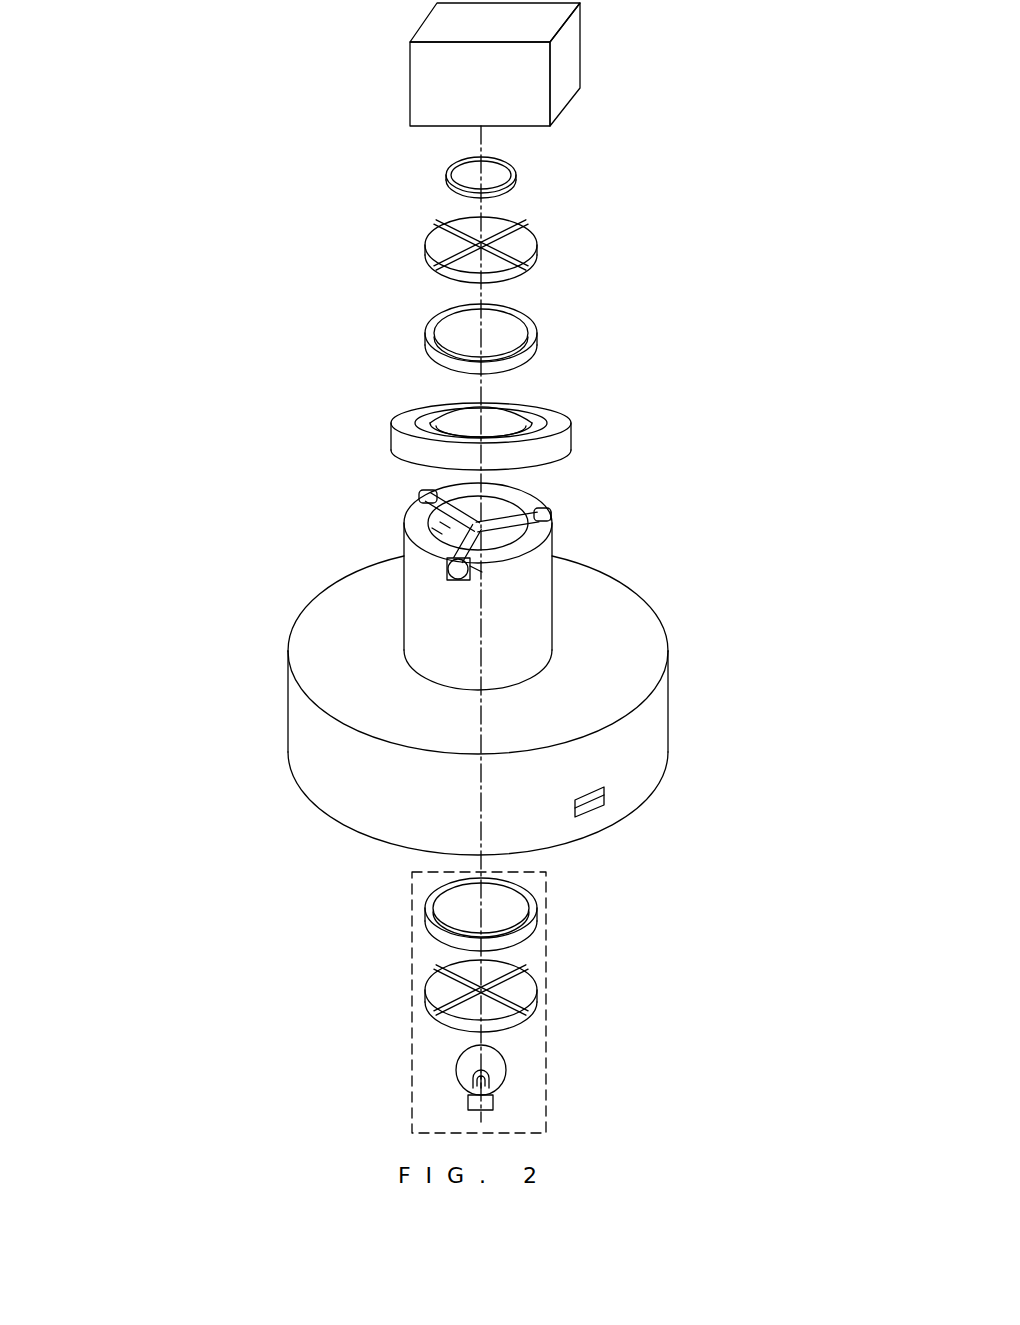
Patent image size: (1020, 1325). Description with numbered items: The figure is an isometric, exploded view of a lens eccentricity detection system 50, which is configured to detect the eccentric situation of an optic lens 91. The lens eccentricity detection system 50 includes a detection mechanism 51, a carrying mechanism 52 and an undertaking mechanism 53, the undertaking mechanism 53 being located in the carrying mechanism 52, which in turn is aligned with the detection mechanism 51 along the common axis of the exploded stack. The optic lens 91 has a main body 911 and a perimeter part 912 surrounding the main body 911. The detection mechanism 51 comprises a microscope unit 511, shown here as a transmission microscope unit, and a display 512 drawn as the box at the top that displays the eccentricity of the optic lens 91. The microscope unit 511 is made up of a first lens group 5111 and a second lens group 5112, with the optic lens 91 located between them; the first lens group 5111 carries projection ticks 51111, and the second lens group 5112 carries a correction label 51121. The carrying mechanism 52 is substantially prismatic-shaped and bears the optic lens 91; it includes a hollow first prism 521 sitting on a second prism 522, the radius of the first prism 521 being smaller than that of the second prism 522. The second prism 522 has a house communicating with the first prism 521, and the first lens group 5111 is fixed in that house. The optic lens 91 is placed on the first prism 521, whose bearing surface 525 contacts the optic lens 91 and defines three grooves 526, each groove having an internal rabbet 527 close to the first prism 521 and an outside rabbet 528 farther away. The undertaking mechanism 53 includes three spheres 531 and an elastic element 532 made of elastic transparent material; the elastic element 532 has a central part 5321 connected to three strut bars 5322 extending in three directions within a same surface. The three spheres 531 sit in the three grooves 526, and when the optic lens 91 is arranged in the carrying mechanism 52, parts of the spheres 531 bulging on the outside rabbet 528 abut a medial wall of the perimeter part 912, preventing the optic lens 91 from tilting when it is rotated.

The lens eccentricity detection system 50 is at (585, 35).
The detection mechanism 51 is at (98, 70).
The display 512 is at (410, 82).
The microscope unit 511 is at (195, 195).
The second lens group 5112 is at (413, 246).
The correction label 51121 is at (517, 224).
The optic lens 91 is at (668, 360).
The main body 911 is at (500, 420).
The perimeter part 912 is at (563, 445).
The undertaking mechanism 53 is at (721, 473).
The spheres 531 is at (540, 514).
The elastic element 532 is at (658, 458).
The central part 5321 is at (485, 523).
The strut bars 5322 is at (462, 514).
The carrying mechanism 52 is at (748, 527).
The first prism 521 is at (512, 628).
The second prism 522 is at (650, 710).
The bearing surface 525 is at (555, 515).
The grooves 526 is at (437, 531).
The internal rabbet 527 is at (447, 525).
The outside rabbet 528 is at (482, 570).
The first lens group 5111 is at (410, 946).
The projection ticks 51111 is at (513, 974).